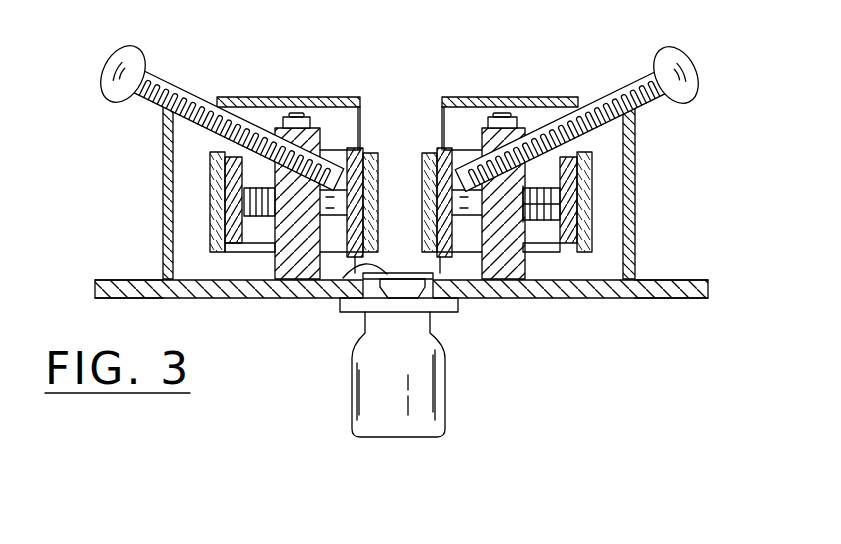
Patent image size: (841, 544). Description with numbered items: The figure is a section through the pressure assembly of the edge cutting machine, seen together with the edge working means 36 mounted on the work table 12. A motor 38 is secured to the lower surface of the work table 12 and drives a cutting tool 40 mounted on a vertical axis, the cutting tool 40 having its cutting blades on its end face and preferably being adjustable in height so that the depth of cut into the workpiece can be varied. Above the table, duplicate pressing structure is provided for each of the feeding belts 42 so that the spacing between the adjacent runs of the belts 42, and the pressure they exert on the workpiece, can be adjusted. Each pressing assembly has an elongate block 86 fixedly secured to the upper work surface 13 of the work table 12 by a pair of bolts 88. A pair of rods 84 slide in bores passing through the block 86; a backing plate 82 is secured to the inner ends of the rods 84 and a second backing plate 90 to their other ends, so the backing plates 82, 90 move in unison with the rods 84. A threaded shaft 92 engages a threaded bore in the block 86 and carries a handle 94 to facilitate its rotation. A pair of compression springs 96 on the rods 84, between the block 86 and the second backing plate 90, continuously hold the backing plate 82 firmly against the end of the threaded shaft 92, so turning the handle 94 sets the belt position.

The work table 12 is at (630, 299).
The work surface 13 is at (140, 278).
The edge working means 36 is at (418, 358).
The motor 38 is at (351, 393).
The cutting tool 40 is at (343, 278).
The belts 42 is at (428, 155).
The backing plate 82 is at (447, 148).
The rods 84 is at (523, 213).
The elongate block 86 is at (293, 257).
The bolts 88 is at (500, 116).
The second backing plate 90 is at (240, 198).
The threaded shaft 92 is at (186, 92).
The handle 94 is at (113, 55).
The compression springs 96 is at (547, 204).